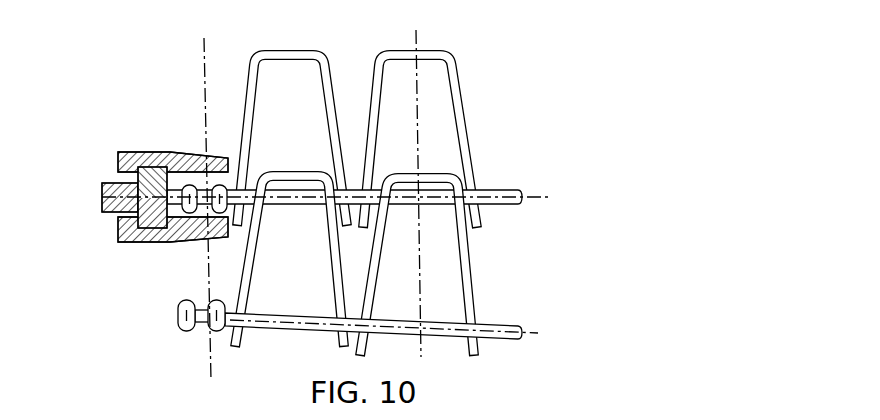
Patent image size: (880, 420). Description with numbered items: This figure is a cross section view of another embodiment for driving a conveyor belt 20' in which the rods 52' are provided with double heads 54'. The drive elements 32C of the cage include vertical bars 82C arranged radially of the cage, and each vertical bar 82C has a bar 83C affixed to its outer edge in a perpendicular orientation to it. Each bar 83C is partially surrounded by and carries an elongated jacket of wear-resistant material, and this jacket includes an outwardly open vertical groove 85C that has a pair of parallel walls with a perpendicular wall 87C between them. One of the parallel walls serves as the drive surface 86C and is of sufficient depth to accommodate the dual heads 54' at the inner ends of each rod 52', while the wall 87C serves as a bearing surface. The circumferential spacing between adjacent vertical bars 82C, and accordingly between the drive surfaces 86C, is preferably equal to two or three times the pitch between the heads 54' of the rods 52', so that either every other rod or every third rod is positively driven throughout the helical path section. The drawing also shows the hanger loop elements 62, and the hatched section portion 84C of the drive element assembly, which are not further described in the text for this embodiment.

The conveyor belt 20' is at (401, 188).
The hanger loops 62 is at (376, 89).
The drive elements 32C is at (102, 146).
The vertical bars 82C is at (102, 205).
The bar 83C is at (155, 156).
The lower housing flange 84C is at (157, 243).
The vertical groove 85C is at (212, 153).
The drive surface 86C is at (221, 192).
The wall 87C is at (191, 183).
The rods 52' is at (386, 347).
The double heads 54' is at (182, 338).